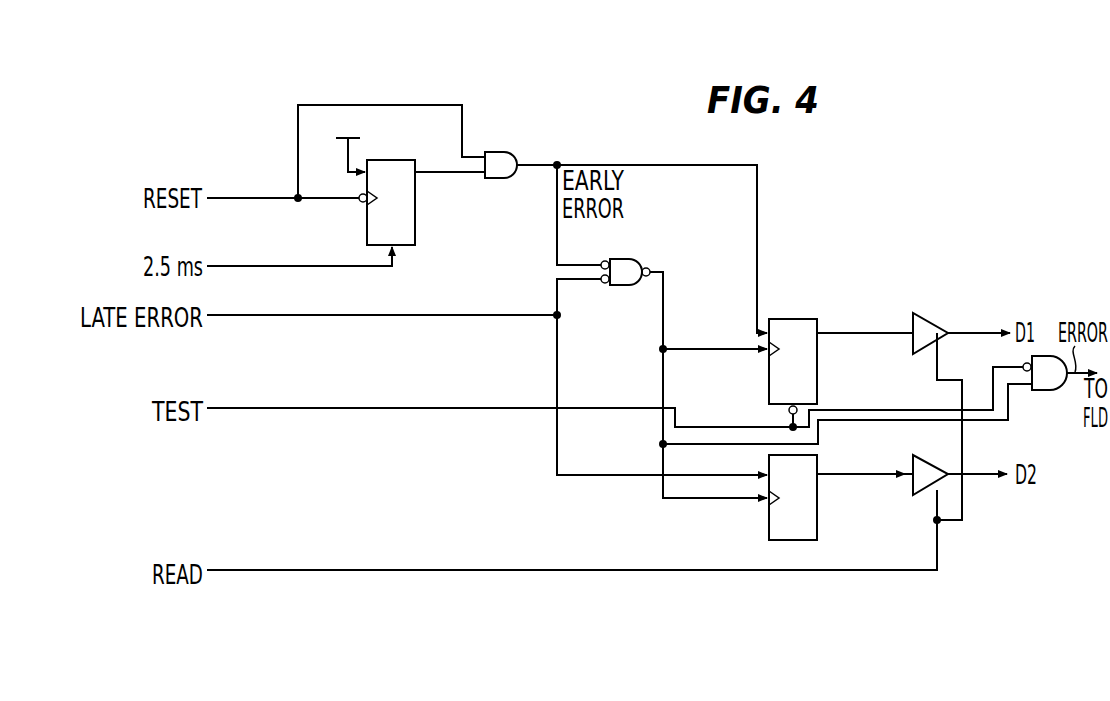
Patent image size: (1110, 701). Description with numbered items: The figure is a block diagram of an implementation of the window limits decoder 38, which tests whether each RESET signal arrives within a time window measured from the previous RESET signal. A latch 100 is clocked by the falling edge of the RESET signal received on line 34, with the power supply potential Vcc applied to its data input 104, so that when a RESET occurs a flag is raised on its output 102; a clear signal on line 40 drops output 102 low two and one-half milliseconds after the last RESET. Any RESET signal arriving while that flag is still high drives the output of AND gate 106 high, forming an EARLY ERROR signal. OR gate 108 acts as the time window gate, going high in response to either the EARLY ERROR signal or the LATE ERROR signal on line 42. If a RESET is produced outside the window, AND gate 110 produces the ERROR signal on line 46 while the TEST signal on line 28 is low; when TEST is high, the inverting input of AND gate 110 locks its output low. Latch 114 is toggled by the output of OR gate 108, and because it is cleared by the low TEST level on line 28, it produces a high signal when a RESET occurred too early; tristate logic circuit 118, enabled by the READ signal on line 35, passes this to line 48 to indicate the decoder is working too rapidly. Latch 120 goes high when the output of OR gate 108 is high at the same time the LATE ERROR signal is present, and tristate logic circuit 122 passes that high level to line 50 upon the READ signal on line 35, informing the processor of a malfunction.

The window limits decoder 38 is at (473, 72).
The line 34 is at (266, 197).
The line 40 is at (268, 265).
The data input 104 is at (348, 150).
The latch 100 is at (415, 226).
The output 102 is at (440, 171).
The AND gate 106 is at (518, 152).
The OR gate 108 is at (632, 259).
The line 42 is at (268, 315).
The line 28 is at (268, 409).
The latch 114 is at (817, 328).
The tristate logic circuit 118 is at (936, 325).
The line 48 is at (988, 334).
The AND gate 110 is at (1045, 356).
The line 46 is at (1063, 390).
The latch 120 is at (812, 455).
The tristate logic circuit 122 is at (940, 460).
The line 50 is at (980, 473).
The line 35 is at (268, 570).